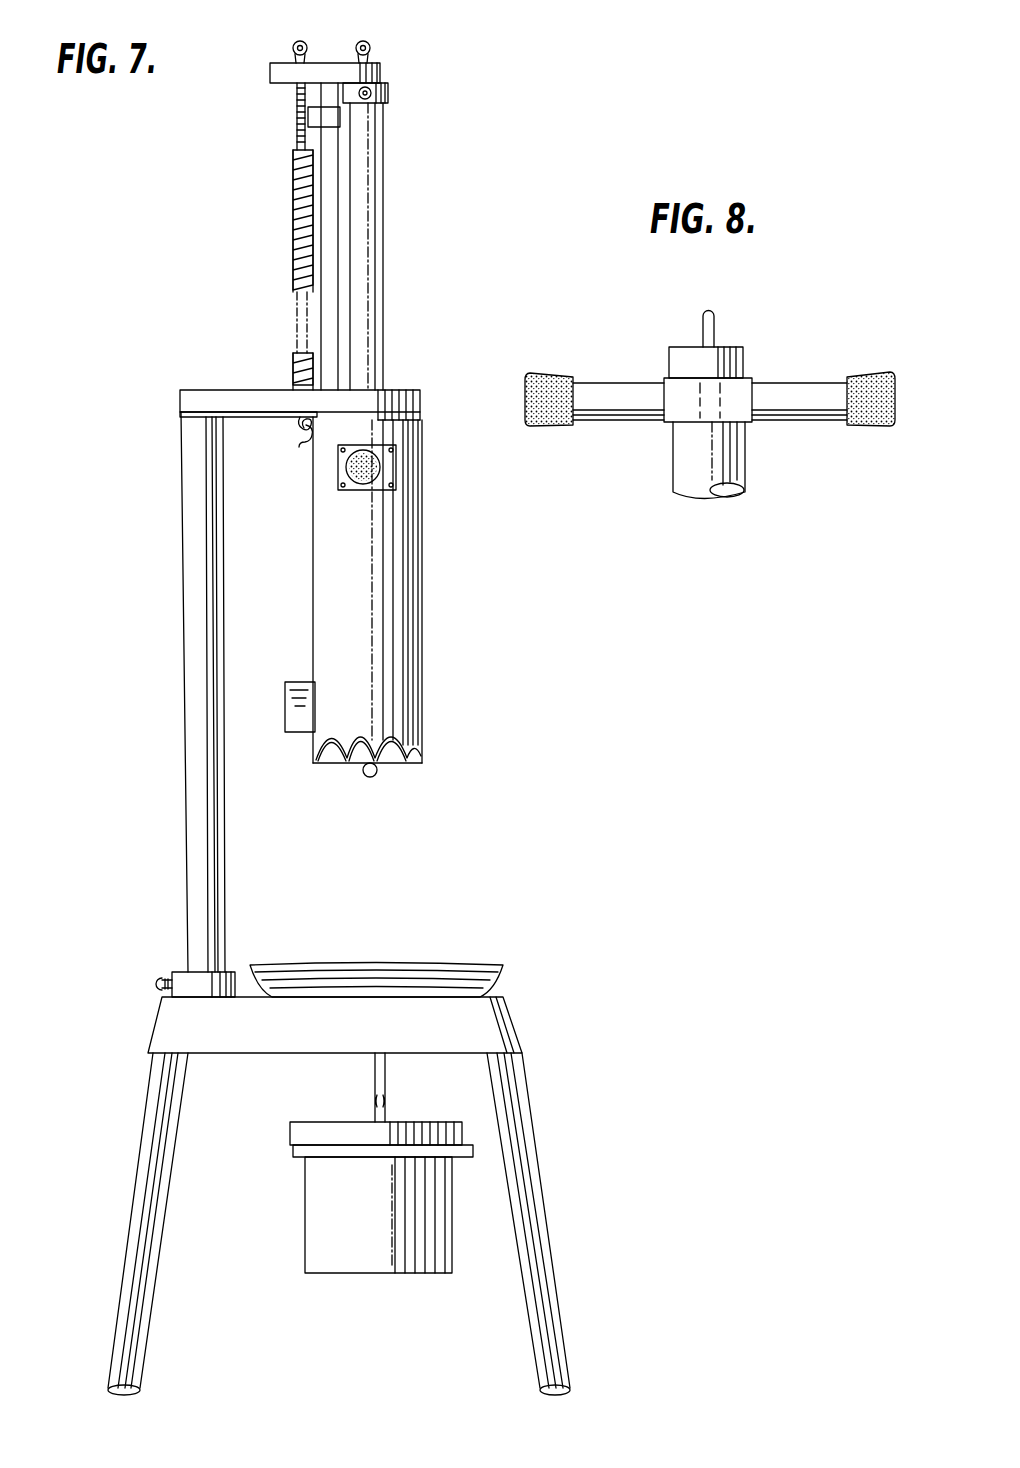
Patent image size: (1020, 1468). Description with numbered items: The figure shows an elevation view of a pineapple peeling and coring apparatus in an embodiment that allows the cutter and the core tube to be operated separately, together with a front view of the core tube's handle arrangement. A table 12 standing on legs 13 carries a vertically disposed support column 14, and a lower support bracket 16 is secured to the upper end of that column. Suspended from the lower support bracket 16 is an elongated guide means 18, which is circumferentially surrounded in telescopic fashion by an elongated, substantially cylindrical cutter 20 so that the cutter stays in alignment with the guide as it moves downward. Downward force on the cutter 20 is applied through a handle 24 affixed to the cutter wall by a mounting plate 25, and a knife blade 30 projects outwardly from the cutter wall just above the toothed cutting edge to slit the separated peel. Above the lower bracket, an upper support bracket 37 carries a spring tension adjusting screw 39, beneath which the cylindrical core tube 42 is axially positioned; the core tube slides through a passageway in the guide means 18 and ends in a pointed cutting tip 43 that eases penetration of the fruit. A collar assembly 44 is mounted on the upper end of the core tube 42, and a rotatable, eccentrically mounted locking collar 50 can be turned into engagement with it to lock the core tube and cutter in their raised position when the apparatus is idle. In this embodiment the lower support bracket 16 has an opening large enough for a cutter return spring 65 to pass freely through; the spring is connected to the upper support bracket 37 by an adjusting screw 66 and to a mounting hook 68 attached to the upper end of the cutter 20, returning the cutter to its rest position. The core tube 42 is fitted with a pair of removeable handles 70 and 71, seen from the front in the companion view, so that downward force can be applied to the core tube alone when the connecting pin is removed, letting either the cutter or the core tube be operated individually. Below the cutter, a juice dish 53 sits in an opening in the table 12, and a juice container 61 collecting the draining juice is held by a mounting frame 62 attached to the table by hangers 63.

In FIG. 7, the table 12 is at (175, 1028).
In FIG. 7, the legs 13 is at (150, 1300).
In FIG. 7, the support column 14 is at (195, 750).
In FIG. 7, the lower support bracket 16 is at (230, 400).
In FIG. 7, the guide means 18 is at (350, 755).
In FIG. 7, the cylindrical cutter 20 is at (410, 585).
In FIG. 7, the handle 24 is at (380, 468).
In FIG. 7, the mounting plate 25 is at (395, 487).
In FIG. 7, the knife blade 30 is at (298, 690).
In FIG. 7, the upper support bracket 37 is at (290, 73).
In FIG. 8, the upper support bracket 37 is at (740, 365).
In FIG. 7, the spring tension adjusting screw 39 is at (372, 48).
In FIG. 8, the spring tension adjusting screw 39 is at (714, 327).
In FIG. 7, the core tube 42 is at (380, 262).
In FIG. 8, the core tube 42 is at (685, 470).
In FIG. 7, the pointed cutting tip 43 is at (376, 775).
In FIG. 7, the collar assembly 44 is at (393, 86).
In FIG. 8, the collar assembly 44 is at (716, 408).
In FIG. 7, the locking collar 50 is at (312, 118).
In FIG. 7, the juice dish 53 is at (450, 980).
In FIG. 7, the juice container 61 is at (400, 1235).
In FIG. 7, the mounting frame 62 is at (375, 1160).
In FIG. 7, the hangers 63 is at (370, 1073).
In FIG. 7, the cutter return spring 65 is at (292, 262).
In FIG. 7, the adjusting screw 66 is at (296, 97).
In FIG. 7, the mounting hook 68 is at (300, 440).
In FIG. 7, the removeable handle 70 is at (372, 96).
In FIG. 8, the removeable handle 70 is at (620, 400).
In FIG. 8, the removeable handle 71 is at (800, 403).